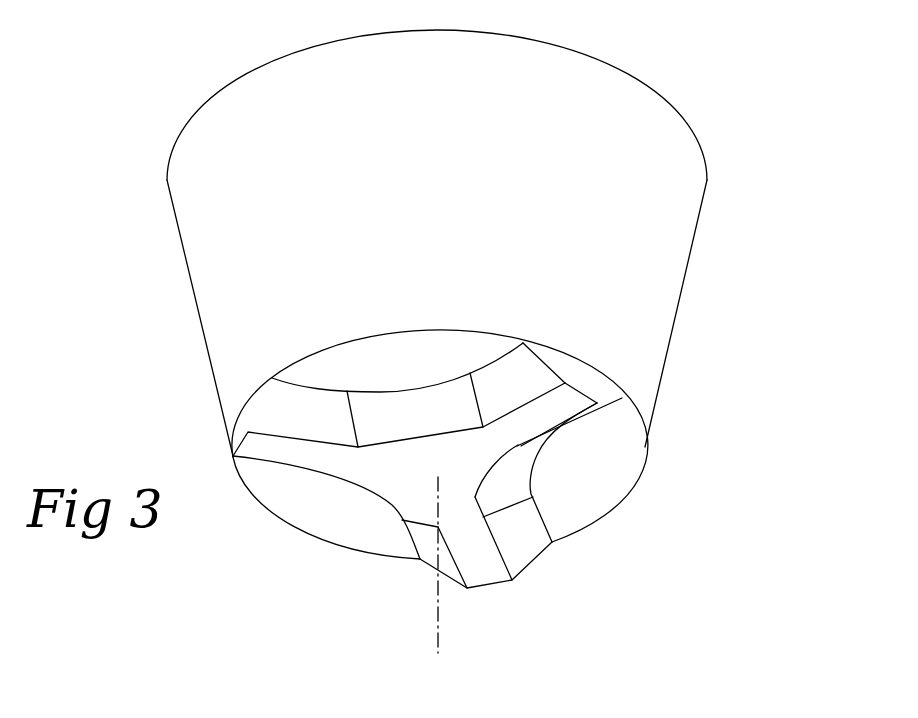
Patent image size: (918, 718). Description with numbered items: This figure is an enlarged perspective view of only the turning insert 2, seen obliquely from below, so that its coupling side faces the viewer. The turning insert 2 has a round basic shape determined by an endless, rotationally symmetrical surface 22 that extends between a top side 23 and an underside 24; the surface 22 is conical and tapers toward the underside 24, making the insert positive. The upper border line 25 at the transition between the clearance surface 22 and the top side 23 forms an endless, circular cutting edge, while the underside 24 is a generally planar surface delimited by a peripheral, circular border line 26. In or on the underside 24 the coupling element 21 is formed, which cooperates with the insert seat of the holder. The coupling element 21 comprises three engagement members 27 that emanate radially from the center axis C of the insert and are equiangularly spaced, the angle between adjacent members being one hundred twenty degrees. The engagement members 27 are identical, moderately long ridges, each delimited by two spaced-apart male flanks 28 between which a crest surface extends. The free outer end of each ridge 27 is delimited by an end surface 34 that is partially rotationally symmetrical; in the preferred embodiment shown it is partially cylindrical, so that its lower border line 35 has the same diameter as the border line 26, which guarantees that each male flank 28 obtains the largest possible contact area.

The turning insert 2 is at (489, 234).
The coupling element 21 is at (546, 584).
The rotationally symmetrical surface 22 is at (436, 224).
The top side 23 is at (653, 82).
The underside 24 is at (349, 526).
The upper border line 25 is at (291, 56).
The border line 26 is at (346, 340).
The engagement member 27 is at (210, 425).
The male flank 28 is at (533, 550).
The end surface 34 is at (566, 362).
The lower border line 35 is at (582, 388).
The center axis C is at (440, 623).